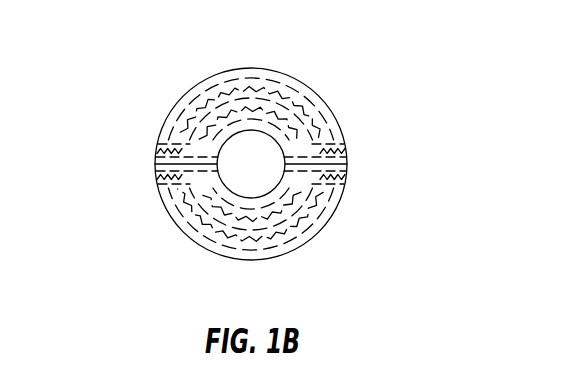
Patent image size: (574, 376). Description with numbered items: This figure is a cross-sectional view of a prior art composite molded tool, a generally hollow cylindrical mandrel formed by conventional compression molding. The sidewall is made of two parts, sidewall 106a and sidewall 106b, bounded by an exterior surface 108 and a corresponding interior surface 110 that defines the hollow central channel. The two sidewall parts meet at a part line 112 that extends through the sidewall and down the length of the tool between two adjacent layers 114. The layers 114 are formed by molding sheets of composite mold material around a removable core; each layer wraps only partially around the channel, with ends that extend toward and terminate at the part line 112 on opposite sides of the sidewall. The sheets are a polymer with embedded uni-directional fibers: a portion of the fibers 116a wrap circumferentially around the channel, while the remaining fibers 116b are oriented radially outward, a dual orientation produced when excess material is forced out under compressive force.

The sidewall 106a is at (365, 122).
The sidewall 106b is at (343, 227).
The exterior surface 108 is at (212, 78).
The interior surface 110 is at (283, 137).
The part line 112 is at (160, 164).
The layers 114 is at (183, 222).
The fibers 116a is at (237, 77).
The fibers 116b is at (160, 147).